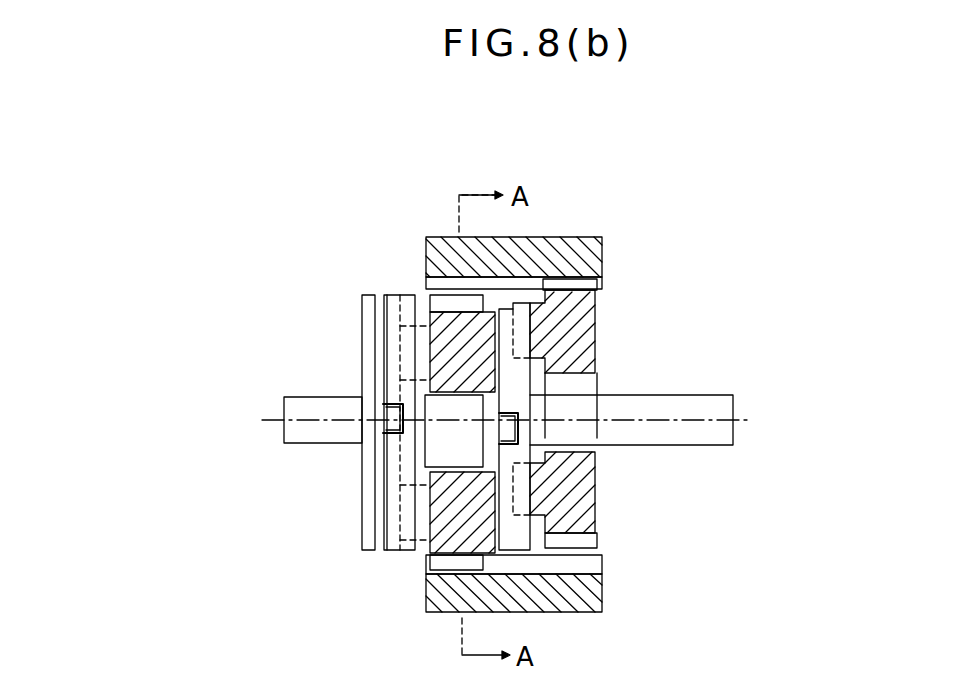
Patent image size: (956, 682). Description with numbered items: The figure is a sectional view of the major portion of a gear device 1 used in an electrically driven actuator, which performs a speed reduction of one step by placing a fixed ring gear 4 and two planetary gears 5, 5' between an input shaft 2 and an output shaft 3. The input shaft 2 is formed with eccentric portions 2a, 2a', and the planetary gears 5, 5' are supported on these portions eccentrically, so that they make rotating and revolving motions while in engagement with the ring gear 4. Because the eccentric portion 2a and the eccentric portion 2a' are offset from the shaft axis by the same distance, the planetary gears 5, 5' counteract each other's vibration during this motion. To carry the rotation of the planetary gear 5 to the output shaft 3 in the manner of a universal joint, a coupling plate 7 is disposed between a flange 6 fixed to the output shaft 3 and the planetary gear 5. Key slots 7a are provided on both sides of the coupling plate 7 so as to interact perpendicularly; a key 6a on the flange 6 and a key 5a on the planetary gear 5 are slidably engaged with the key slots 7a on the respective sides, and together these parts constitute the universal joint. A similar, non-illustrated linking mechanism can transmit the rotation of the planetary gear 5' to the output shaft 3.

The gear device 1 is at (632, 204).
The input shaft 2 is at (710, 403).
The eccentric portion 2a is at (415, 364).
The eccentric portion 2a' is at (599, 420).
The output shaft 3 is at (308, 407).
The fixed ring gear 4 is at (593, 255).
The planetary gear 5 is at (441, 484).
The key 5a is at (422, 337).
The planetary gear 5' is at (614, 419).
The flange 6 is at (372, 303).
The key 6a is at (383, 406).
The coupling plate 7 is at (393, 551).
The key slots 7a is at (400, 466).